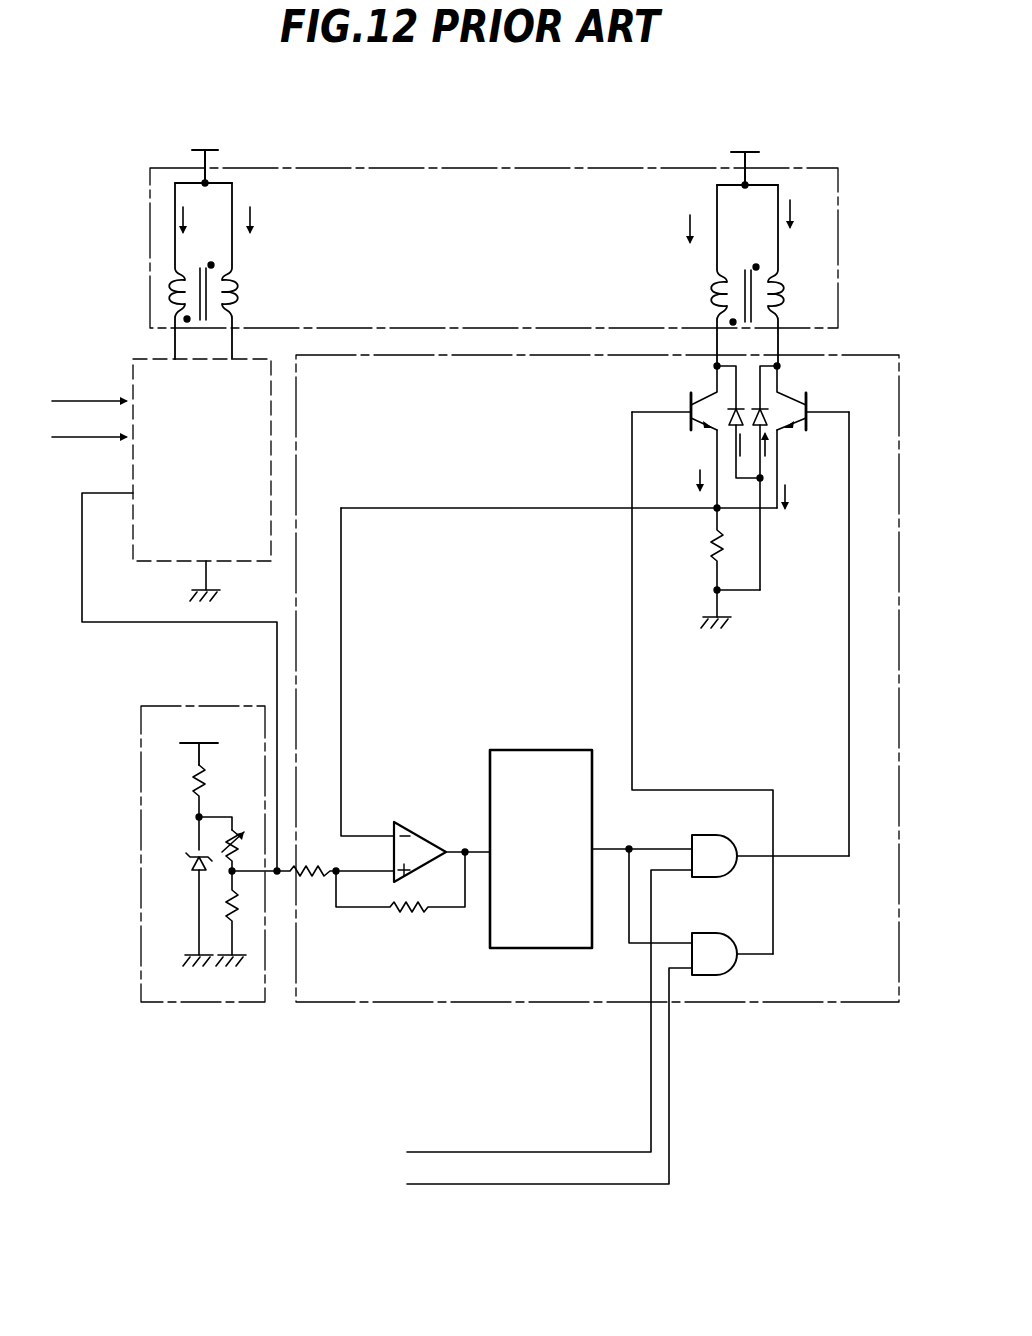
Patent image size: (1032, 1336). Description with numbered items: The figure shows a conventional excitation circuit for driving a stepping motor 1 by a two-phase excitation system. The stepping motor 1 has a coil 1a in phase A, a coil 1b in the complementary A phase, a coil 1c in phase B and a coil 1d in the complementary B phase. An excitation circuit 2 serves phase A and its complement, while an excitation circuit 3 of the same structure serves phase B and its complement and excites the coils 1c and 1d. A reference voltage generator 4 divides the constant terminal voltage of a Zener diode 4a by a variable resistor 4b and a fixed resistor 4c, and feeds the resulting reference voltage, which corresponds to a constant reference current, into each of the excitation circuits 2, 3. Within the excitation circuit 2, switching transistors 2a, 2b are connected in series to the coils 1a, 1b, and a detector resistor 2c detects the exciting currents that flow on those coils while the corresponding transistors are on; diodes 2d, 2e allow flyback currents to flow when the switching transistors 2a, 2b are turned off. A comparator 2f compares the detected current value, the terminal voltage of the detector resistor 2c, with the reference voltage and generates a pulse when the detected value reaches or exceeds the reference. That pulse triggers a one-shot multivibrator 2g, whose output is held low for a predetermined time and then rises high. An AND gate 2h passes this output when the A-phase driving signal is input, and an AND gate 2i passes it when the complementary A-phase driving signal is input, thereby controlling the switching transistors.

The stepping motor 1 is at (540, 170).
The coil in the phase A 1a is at (783, 292).
The coil in the phase *A 1b is at (712, 295).
The coil in the phase B 1c is at (242, 292).
The coil in the phase *B 1d is at (168, 292).
The excitation circuit for the phases A and *A 2 is at (400, 361).
The switching transistor 2a is at (808, 430).
The switching transistor 2b is at (695, 420).
The detector resistor 2c is at (705, 545).
The diode 2d is at (792, 394).
The diode 2e is at (712, 392).
The comparator 2f is at (412, 826).
The one-shot multivibrator 2g is at (535, 750).
The AND gate 2h is at (713, 835).
The AND gate 2i is at (713, 933).
The excitation circuit for the phases B and *B 3 is at (252, 360).
The reference voltage generator 4 is at (209, 860).
The Zener diode 4a is at (190, 862).
The variable resistor 4b is at (240, 830).
The fixed resistor 4c is at (240, 900).